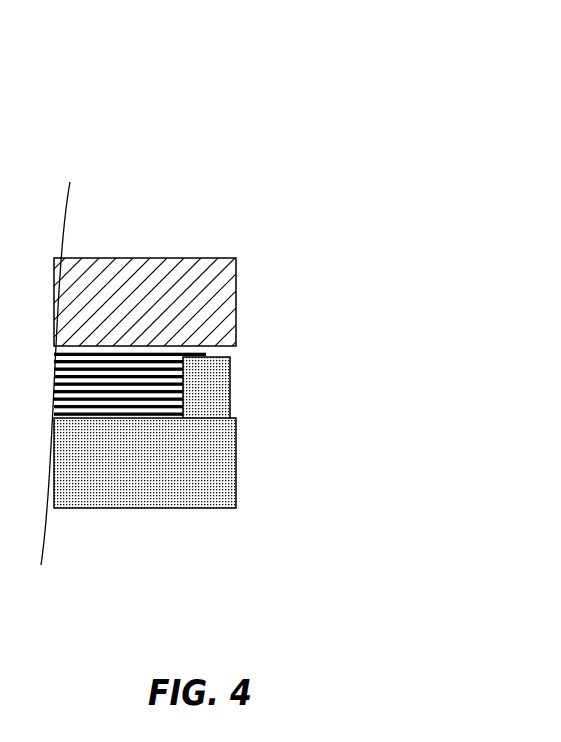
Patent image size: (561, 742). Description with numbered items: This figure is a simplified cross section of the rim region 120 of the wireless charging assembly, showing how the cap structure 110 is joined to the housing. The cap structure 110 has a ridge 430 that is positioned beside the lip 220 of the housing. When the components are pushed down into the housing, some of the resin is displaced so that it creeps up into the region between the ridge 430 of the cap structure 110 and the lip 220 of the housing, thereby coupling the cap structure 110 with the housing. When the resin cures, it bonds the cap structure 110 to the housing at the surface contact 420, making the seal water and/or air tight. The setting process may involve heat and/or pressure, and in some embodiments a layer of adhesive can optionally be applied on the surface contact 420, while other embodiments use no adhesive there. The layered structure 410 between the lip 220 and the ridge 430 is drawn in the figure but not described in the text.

The rim region 120 is at (345, 77).
The lip 220 is at (175, 278).
The surface contact 420 is at (217, 352).
The layered interconnect structure 410 is at (128, 405).
The ridge 430 is at (208, 389).
The cap structure 110 is at (187, 464).